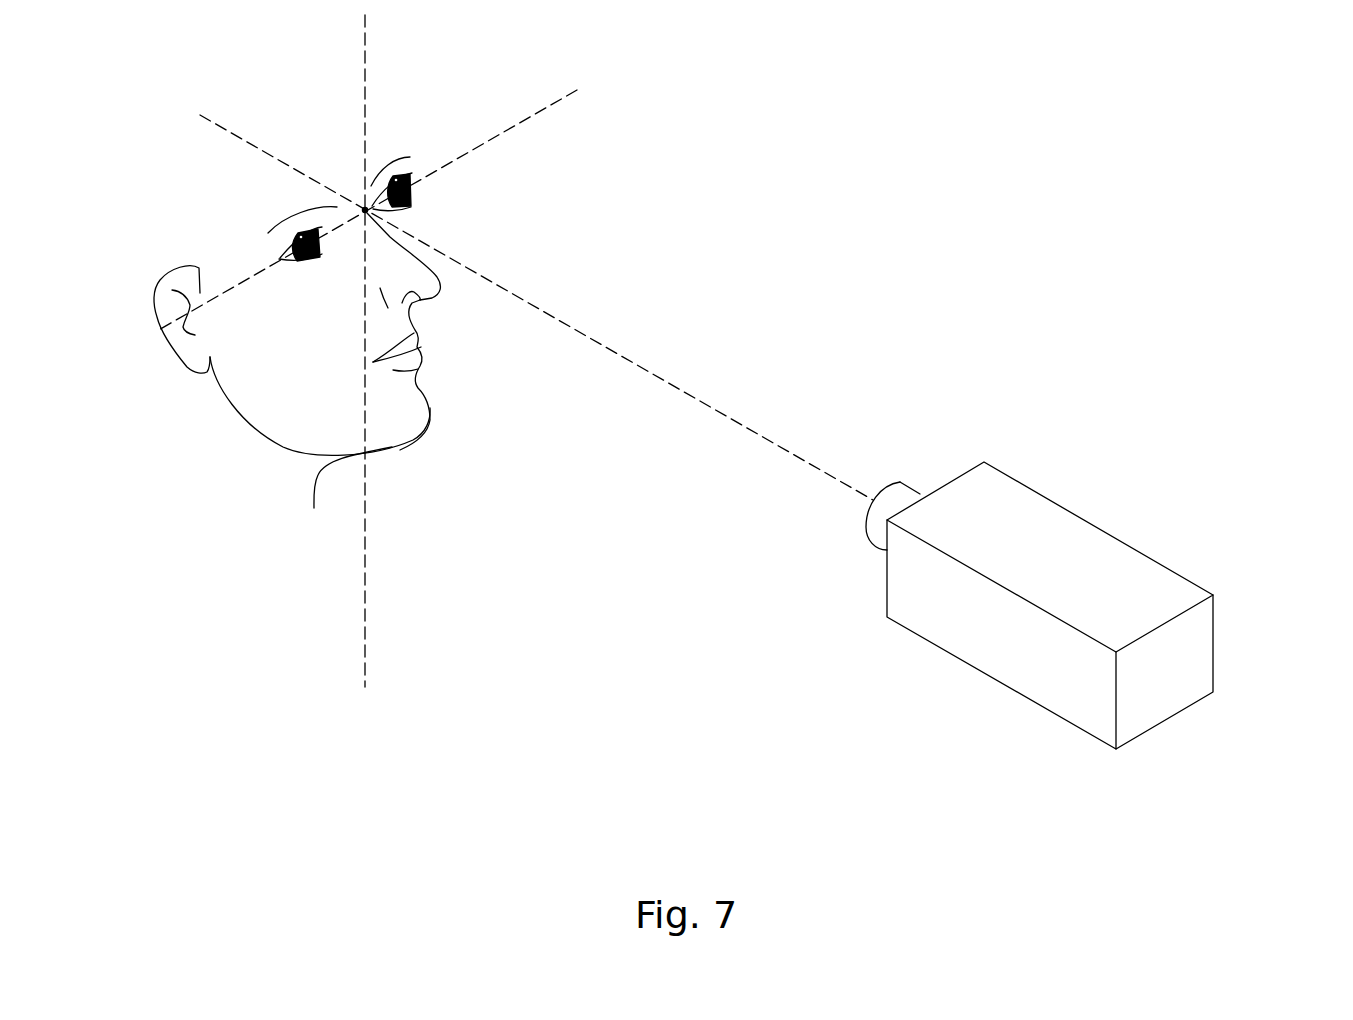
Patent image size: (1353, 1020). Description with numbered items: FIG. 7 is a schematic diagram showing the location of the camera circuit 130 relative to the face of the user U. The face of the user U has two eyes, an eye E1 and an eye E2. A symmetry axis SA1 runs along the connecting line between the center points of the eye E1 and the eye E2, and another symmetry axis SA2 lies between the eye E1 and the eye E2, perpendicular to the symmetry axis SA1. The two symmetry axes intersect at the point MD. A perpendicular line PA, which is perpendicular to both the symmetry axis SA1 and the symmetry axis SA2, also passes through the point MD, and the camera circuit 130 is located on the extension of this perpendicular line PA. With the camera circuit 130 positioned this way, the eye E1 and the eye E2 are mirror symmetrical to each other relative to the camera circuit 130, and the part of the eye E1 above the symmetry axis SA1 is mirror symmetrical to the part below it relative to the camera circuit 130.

The user U is at (295, 447).
The eye E1 is at (309, 264).
The eye E2 is at (400, 210).
The point MD is at (365, 210).
The symmetry axis SA1 is at (398, 199).
The symmetry axis SA2 is at (363, 369).
The perpendicular line PA is at (725, 418).
The camera circuit 130 is at (1213, 650).